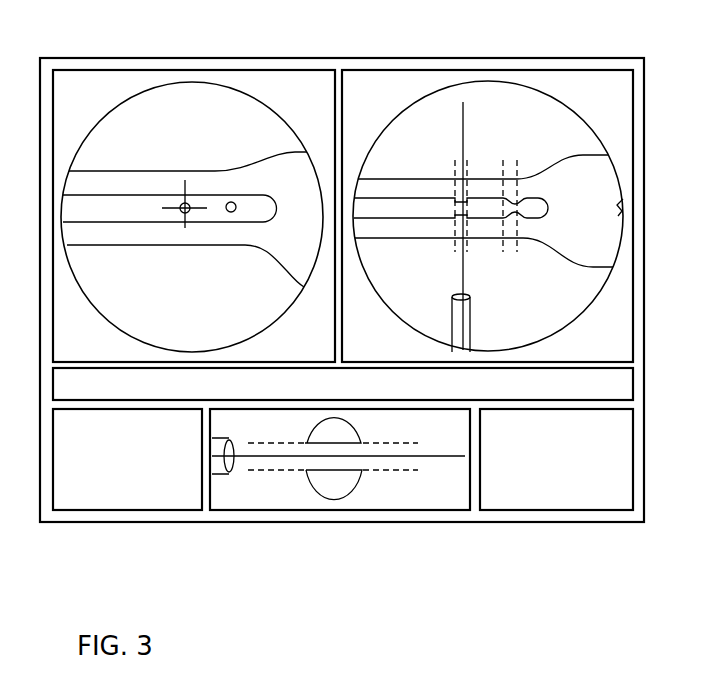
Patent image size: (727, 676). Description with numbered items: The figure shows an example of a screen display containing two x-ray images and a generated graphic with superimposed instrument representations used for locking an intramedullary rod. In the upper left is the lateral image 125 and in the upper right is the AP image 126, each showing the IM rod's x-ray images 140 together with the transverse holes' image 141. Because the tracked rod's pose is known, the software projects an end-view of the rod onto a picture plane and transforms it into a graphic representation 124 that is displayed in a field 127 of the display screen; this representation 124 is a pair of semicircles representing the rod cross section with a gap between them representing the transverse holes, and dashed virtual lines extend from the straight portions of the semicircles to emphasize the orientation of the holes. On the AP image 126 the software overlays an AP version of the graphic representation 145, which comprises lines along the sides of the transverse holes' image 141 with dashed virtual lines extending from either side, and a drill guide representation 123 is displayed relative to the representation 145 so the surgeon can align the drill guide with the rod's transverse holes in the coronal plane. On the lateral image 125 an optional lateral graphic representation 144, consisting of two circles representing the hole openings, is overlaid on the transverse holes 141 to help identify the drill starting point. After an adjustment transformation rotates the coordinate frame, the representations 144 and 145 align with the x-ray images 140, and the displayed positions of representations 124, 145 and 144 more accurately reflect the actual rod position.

The drill guide representation 123 is at (189, 230).
The graphic representation of the IM rod 124 is at (367, 449).
The lateral image 125 is at (263, 97).
The AP image 126 is at (557, 97).
The field of the display screen 127 is at (455, 496).
The IM rod x-ray images 140 is at (130, 215).
The transverse holes image 141 is at (192, 201).
The lateral graphic representation of the transverse holes 144 is at (221, 199).
The AP graphic representation of the IM rod 145 is at (461, 158).